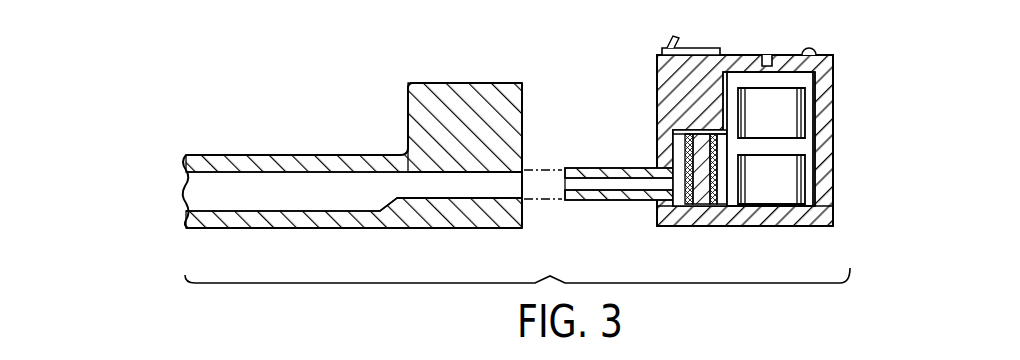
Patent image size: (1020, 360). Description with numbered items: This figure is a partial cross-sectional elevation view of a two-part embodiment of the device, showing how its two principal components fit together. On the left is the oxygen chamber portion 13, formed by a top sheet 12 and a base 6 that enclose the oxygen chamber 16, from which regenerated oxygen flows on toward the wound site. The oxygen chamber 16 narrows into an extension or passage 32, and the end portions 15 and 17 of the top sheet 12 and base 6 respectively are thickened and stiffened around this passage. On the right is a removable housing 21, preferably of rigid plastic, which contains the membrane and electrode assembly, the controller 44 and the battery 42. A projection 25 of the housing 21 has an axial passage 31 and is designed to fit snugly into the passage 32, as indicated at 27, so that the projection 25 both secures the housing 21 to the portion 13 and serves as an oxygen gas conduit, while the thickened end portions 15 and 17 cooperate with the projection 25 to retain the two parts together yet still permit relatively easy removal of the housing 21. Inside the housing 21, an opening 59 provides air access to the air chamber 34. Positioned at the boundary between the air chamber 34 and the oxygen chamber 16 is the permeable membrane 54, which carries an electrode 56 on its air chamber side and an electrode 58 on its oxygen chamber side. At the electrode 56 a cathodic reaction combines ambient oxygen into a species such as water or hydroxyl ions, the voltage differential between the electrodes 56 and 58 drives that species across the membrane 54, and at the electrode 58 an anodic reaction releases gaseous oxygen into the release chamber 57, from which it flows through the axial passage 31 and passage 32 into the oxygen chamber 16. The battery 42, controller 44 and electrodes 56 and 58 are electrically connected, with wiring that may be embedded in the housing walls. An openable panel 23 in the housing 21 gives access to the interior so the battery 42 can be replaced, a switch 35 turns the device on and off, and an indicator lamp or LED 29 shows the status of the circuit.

The base 6 is at (255, 228).
The top sheet 12 is at (258, 155).
The oxygen chamber portion 13 is at (358, 116).
The end portion of top sheet 15 is at (475, 83).
The oxygen chamber 16 is at (227, 200).
The end portion of base 17 is at (415, 228).
The removable housing 21 is at (835, 66).
The openable panel 23 is at (795, 223).
The projection 25 is at (598, 168).
The fit of projection into passage 27 is at (533, 202).
The indicator lamp or LED 29 is at (812, 47).
The axial passage 31 is at (587, 184).
The extension of oxygen chamber 32 is at (453, 187).
The air chamber 34 is at (811, 139).
The switch 35 is at (668, 46).
The battery 42 is at (788, 178).
The controller 44 is at (788, 108).
The permeable membrane 54 is at (697, 210).
The electrode 56 is at (725, 192).
The release chamber 57 is at (676, 142).
The electrode 58 is at (672, 196).
The opening 59 is at (775, 62).